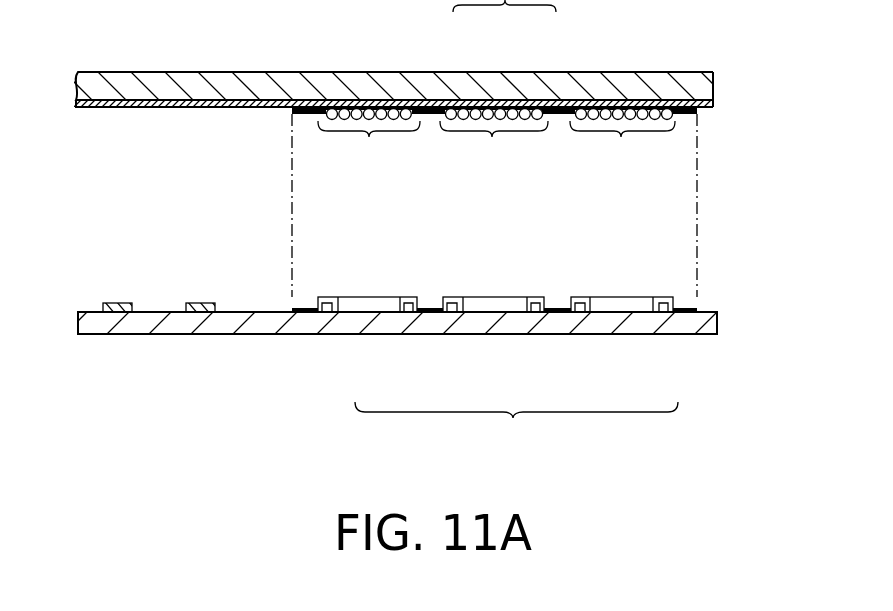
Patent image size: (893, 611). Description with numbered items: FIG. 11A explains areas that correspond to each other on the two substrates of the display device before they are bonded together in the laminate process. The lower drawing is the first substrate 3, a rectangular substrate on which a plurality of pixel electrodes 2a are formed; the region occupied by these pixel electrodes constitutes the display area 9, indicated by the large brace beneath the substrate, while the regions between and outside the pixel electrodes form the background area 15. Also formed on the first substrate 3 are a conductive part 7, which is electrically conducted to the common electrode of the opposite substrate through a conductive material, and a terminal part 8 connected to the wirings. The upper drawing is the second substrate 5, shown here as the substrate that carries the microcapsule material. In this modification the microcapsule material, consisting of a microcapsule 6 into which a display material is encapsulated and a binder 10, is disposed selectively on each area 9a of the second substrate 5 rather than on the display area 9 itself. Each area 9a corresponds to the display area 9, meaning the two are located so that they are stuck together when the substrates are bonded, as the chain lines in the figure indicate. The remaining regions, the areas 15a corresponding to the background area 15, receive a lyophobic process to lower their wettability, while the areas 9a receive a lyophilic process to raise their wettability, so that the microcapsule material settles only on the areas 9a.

The second substrate 5 is at (249, 70).
The microcapsule 6 is at (453, 102).
The binder 10 is at (517, 106).
The area corresponding to the background area 15a is at (304, 106).
The area corresponding to the display area 9a is at (496, 137).
The first substrate 3 is at (250, 335).
The terminal part 8 is at (117, 303).
The conductive part 7 is at (200, 303).
The background area 15 is at (305, 307).
The pixel electrode 2a is at (405, 310).
The display area 9 is at (516, 426).